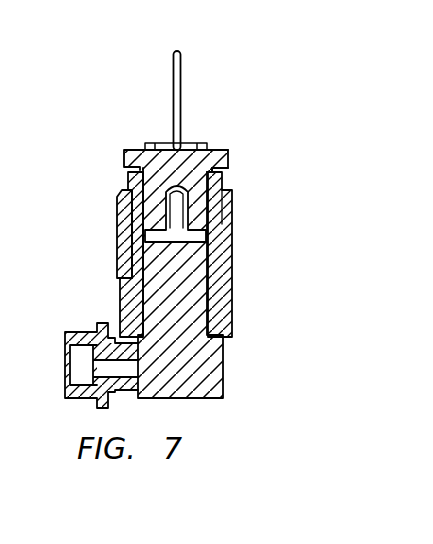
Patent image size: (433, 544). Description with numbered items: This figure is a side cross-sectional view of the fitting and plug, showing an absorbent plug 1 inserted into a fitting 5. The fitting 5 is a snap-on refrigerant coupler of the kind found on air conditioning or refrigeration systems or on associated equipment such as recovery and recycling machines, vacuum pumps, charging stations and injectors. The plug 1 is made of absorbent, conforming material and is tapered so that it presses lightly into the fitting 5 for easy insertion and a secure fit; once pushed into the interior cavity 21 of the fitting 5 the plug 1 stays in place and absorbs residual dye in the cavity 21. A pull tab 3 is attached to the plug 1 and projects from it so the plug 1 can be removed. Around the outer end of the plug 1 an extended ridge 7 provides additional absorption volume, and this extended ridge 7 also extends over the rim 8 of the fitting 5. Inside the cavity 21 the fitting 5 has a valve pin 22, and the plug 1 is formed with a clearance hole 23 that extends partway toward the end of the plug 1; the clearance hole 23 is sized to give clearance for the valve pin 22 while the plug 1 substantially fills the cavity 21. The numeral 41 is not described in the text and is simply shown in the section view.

The absorbent plug 1 is at (120, 304).
The pull tab 3 is at (180, 84).
The fitting 5 is at (141, 148).
The extended ridge 7 is at (125, 157).
The rim 8 is at (137, 168).
The interior cavity 21 is at (211, 225).
The valve pin 22 is at (163, 207).
The clearance hole 23 is at (212, 153).
The flange 41 is at (210, 170).